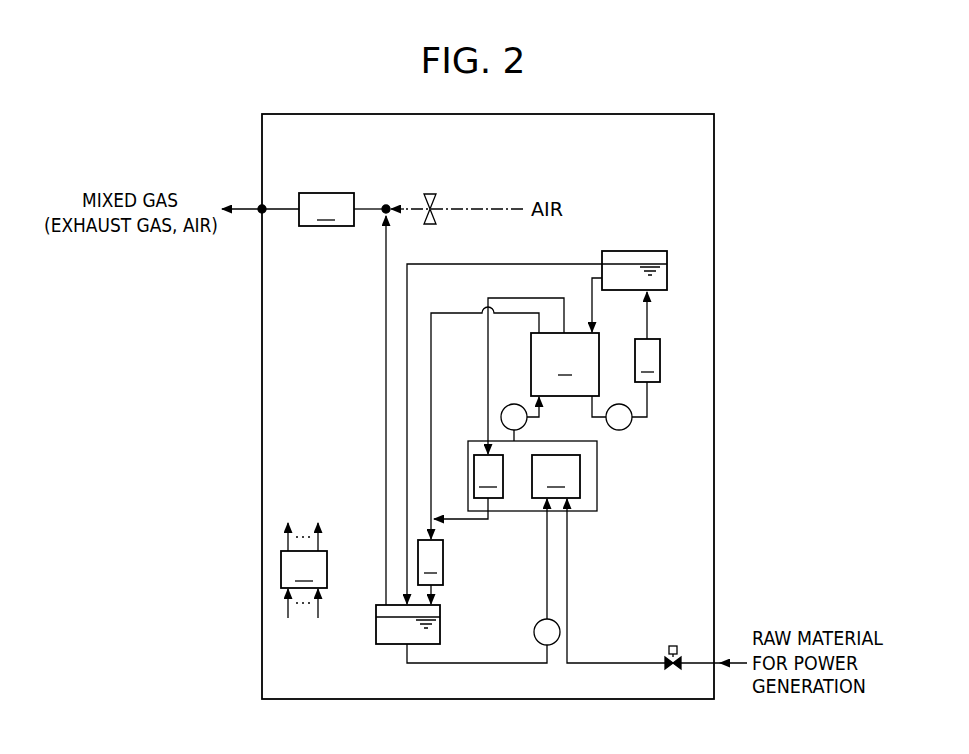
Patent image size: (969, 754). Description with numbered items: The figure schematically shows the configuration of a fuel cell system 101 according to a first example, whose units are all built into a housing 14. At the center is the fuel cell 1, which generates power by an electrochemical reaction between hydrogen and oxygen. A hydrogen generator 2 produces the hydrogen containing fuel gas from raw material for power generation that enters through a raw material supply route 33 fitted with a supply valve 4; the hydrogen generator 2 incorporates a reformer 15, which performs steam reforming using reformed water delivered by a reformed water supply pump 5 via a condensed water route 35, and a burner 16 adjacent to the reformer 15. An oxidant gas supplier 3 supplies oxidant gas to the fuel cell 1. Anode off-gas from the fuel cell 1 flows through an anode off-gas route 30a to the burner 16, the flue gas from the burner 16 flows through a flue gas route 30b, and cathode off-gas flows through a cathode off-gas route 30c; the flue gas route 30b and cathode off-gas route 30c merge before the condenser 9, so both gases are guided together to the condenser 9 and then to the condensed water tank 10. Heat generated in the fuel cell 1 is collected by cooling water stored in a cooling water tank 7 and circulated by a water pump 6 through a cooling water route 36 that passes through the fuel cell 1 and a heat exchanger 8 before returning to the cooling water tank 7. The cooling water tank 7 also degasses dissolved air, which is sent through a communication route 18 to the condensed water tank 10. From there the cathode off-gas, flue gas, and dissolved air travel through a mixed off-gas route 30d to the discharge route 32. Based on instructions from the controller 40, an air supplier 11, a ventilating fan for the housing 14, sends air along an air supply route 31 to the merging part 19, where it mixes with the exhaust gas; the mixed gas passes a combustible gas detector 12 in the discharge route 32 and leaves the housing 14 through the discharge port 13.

The fuel cell 1 is at (566, 337).
The hydrogen generator 2 is at (597, 490).
The oxidant gas supplier 3 is at (514, 404).
The supply valve 4 is at (673, 645).
The reformed water supply pump 5 is at (536, 623).
The water pump 6 is at (623, 430).
The cooling water tank 7 is at (632, 251).
The heat exchanger 8 is at (647, 360).
The condenser 9 is at (430, 572).
The condensed water tank 10 is at (440, 628).
The air supplier 11 is at (430, 193).
The combustible gas detector 12 is at (326, 209).
The discharge port 13 is at (264, 206).
The housing 14 is at (714, 255).
The reformer 15 is at (556, 476).
The burner 16 is at (488, 476).
The communication route 18 is at (478, 264).
The merging part 19 is at (386, 204).
The anode off-gas route 30a is at (523, 297).
The flue gas route 30b is at (455, 521).
The cathode off-gas route 30c is at (431, 408).
The mixed off-gas route 30d is at (386, 438).
The air supply route 31 is at (470, 209).
The discharge route 32 is at (373, 212).
The raw material supply route 33 is at (567, 575).
The condensed water route 35 is at (547, 566).
The cooling water route 36 is at (648, 318).
The controller 40 is at (303, 570).
The fuel cell system 101 is at (665, 156).